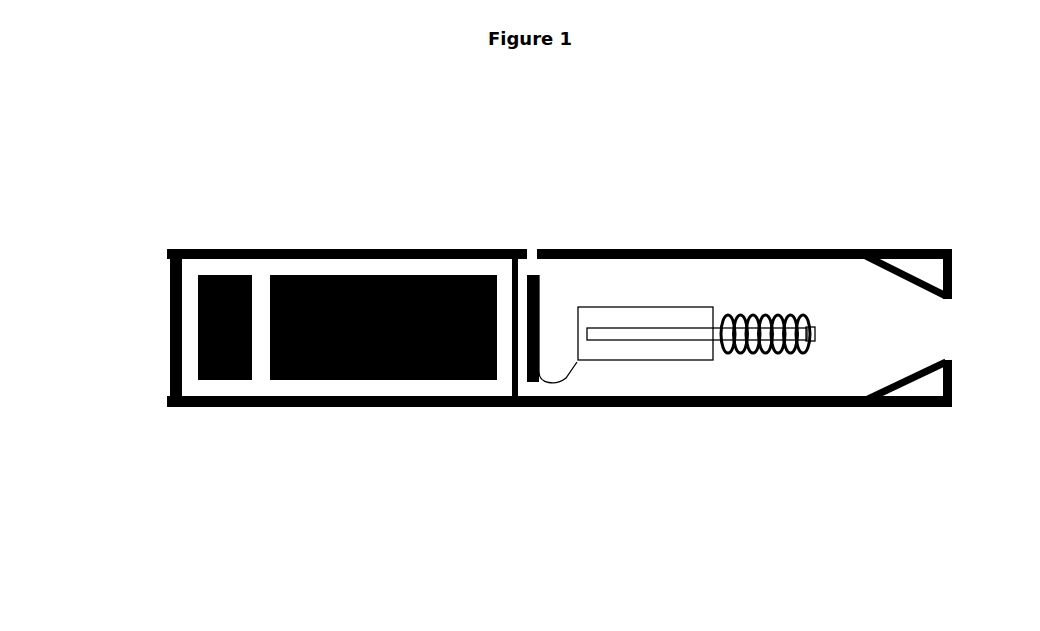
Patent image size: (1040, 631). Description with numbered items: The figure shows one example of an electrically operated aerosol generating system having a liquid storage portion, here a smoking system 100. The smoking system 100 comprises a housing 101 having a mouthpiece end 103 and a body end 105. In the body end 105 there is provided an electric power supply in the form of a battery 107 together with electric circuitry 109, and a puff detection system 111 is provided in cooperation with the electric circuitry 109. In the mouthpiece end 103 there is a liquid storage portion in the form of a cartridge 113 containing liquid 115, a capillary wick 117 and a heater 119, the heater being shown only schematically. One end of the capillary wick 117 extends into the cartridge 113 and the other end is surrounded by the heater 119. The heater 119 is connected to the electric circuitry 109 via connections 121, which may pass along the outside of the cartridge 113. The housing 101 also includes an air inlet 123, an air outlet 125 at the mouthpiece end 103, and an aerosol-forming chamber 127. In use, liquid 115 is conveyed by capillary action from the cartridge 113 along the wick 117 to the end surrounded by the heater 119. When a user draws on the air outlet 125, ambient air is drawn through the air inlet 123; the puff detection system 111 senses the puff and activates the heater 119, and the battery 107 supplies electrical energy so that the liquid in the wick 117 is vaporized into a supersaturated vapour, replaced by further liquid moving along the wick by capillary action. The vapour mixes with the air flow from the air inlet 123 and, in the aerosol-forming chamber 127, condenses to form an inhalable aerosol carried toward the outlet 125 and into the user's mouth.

The smoking system 100 is at (137, 243).
The housing 101 is at (342, 250).
The mouthpiece end 103 is at (917, 468).
The body end 105 is at (283, 467).
The battery 107 is at (383, 367).
The electric circuitry 109 is at (219, 367).
The puff detection system 111 is at (550, 293).
The cartridge 113 is at (650, 362).
The liquid 115 is at (640, 315).
The capillary wick 117 is at (813, 342).
The heater 119 is at (763, 362).
The connections 121 is at (568, 373).
The air inlet 123 is at (527, 240).
The air outlet 125 is at (962, 330).
The aerosol-forming chamber 127 is at (793, 285).